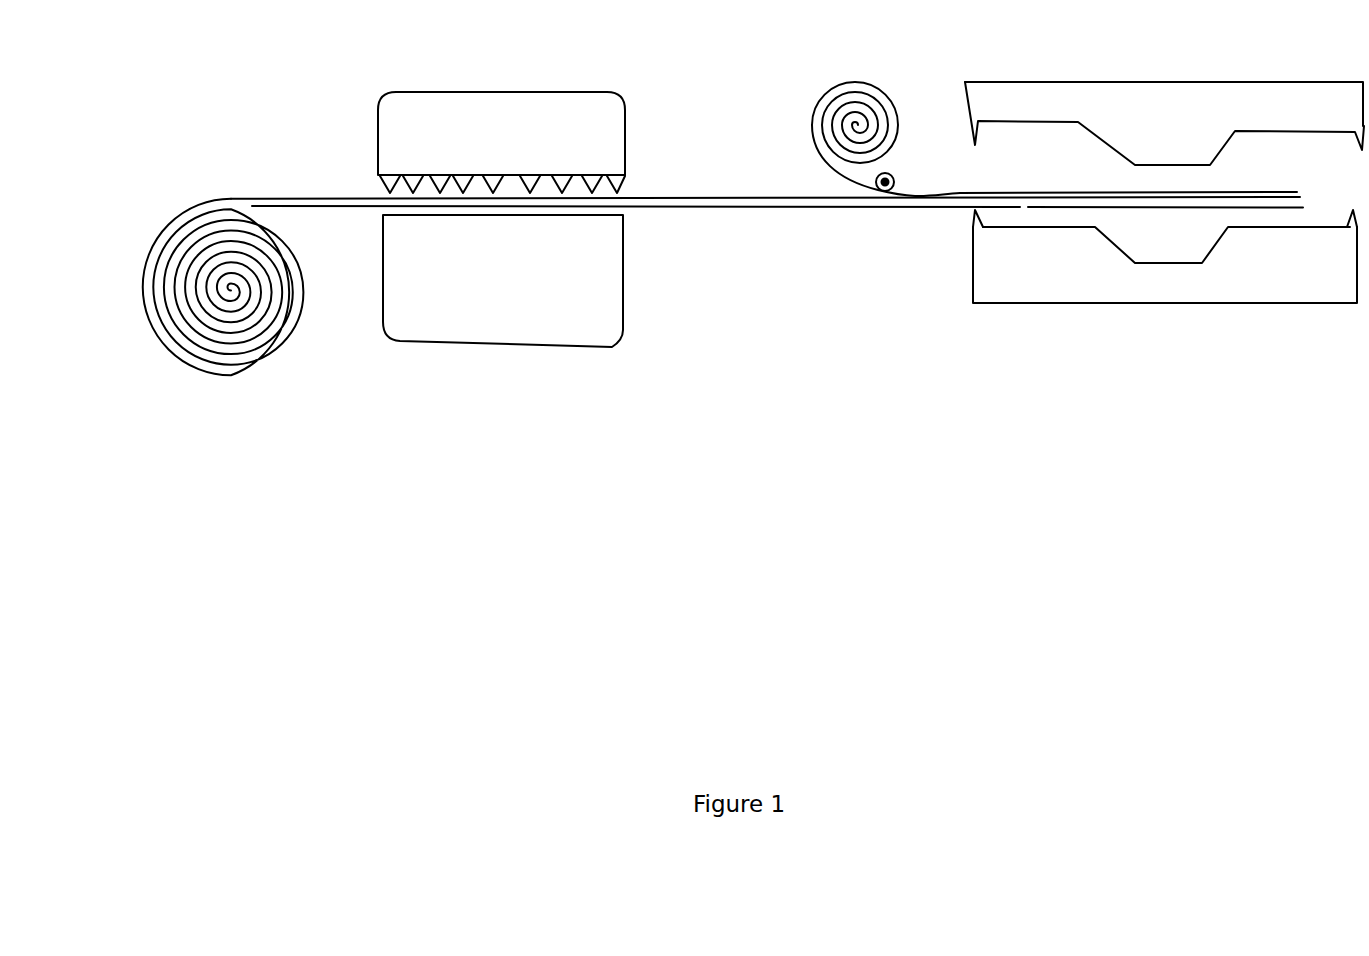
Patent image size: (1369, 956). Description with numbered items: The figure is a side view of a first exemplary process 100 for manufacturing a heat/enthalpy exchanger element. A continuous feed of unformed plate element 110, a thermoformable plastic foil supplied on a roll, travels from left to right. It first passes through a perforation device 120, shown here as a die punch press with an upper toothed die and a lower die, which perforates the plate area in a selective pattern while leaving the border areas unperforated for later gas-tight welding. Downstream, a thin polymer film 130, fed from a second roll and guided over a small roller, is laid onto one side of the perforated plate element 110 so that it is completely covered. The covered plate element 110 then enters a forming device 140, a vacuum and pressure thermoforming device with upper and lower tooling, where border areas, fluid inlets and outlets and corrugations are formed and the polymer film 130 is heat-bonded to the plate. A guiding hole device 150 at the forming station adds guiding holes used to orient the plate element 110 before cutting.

The system for forming a pressure-sensitive adhesive product / material web 100 is at (113, 177).
The unformed plate element 110 is at (186, 366).
The perforation device 120 is at (611, 348).
The polymer film 130 is at (806, 123).
The forming device 140 is at (1000, 305).
The guiding hole device 150 is at (973, 214).